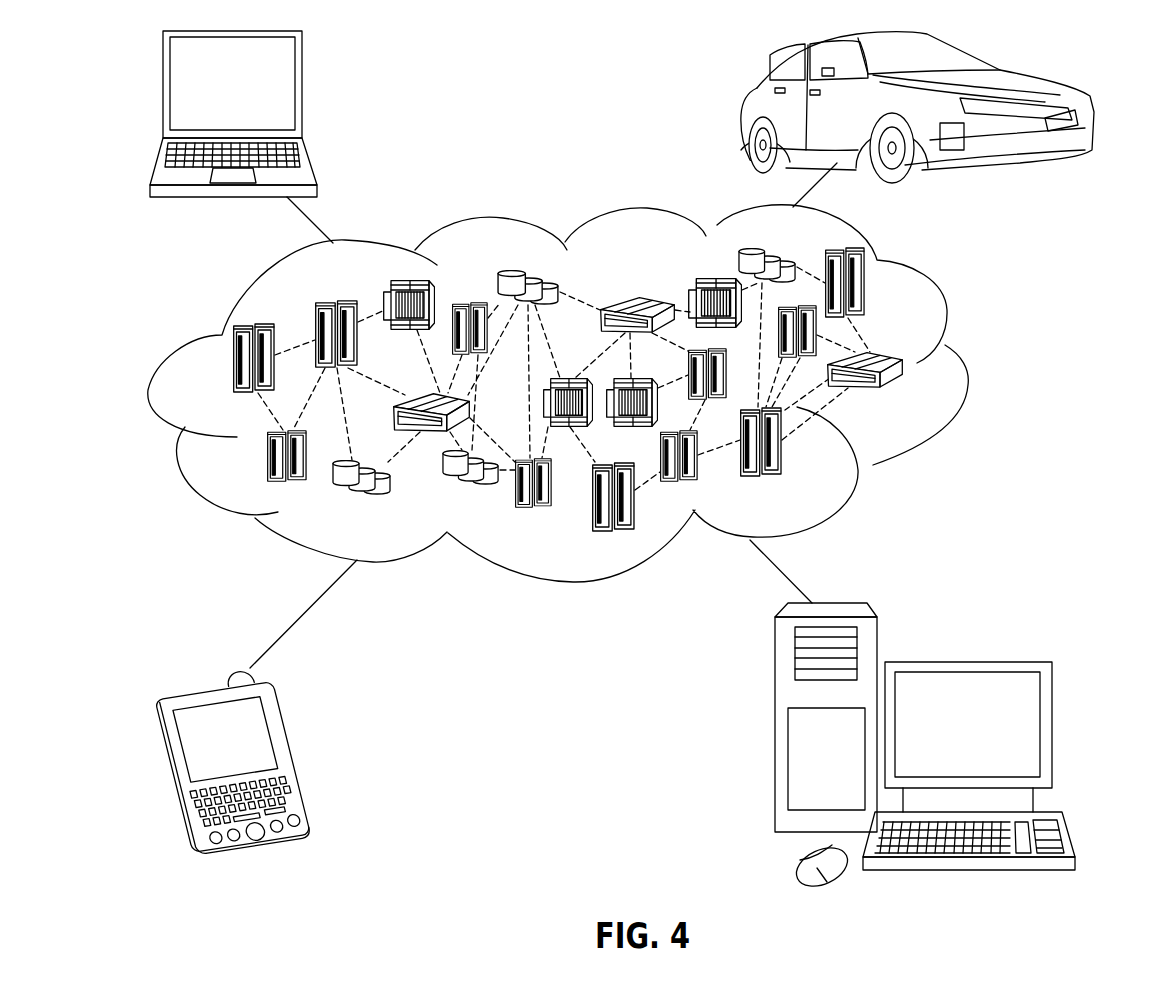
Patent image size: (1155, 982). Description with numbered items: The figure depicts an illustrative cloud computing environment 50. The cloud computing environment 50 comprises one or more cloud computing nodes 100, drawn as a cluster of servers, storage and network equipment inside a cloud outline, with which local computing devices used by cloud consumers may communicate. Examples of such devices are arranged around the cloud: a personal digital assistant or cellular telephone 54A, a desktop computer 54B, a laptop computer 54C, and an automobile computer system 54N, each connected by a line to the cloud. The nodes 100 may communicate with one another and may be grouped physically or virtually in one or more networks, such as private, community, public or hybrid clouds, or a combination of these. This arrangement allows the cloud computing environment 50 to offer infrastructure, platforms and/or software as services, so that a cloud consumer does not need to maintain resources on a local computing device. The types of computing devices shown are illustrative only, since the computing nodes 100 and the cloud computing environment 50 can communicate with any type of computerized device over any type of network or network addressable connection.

The cloud computing environment 50 is at (968, 366).
The cloud computing nodes 100 is at (912, 404).
The personal digital assistant or cellular telephone 54A is at (292, 757).
The desktop computer 54B is at (965, 660).
The laptop computer 54C is at (302, 90).
The automobile computer system 54N is at (748, 108).